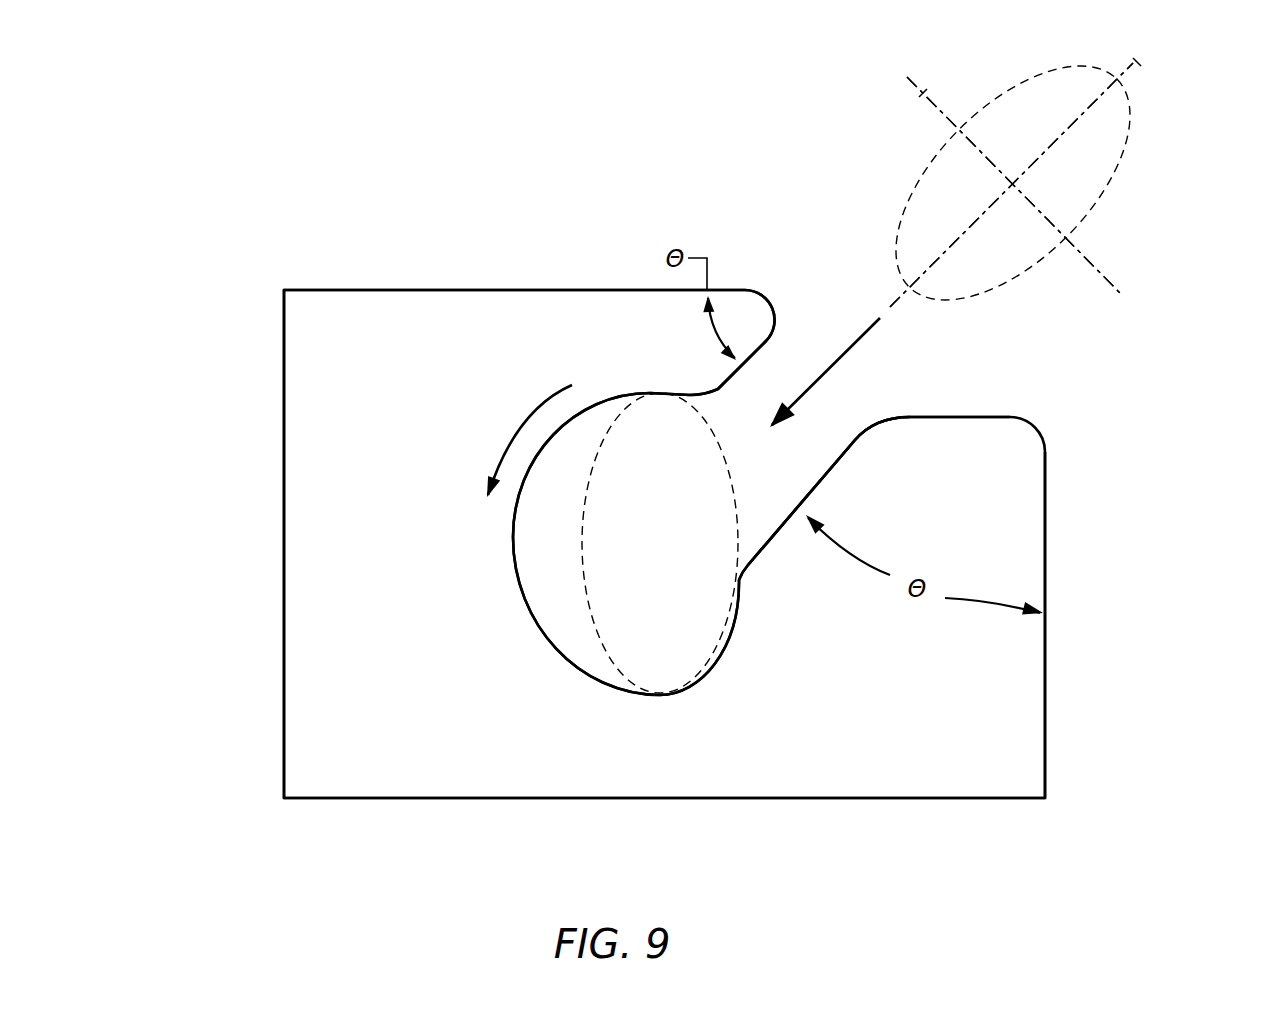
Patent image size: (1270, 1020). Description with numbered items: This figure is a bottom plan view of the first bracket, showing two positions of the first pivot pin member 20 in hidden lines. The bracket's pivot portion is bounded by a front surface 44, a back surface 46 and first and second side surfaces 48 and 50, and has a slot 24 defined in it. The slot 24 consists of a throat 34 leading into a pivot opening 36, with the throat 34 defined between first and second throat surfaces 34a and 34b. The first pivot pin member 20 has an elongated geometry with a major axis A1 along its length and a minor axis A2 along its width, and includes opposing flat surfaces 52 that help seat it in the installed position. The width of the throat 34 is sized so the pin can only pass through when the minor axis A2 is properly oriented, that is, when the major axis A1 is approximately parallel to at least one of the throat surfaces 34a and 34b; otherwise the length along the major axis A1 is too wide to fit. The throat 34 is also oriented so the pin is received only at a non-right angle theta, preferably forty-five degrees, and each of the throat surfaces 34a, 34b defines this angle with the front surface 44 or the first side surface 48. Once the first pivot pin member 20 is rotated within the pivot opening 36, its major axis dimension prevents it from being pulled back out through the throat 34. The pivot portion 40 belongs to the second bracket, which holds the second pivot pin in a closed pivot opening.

The first pivot pin member 20 is at (670, 658).
The slot 24 is at (870, 418).
The throat 34 is at (782, 482).
The first throat surface 34a is at (780, 540).
The second throat surface 34b is at (727, 373).
The pivot opening 36 is at (575, 645).
The pivot portion 40 is at (327, 697).
The front surface 44 is at (358, 290).
The back surface 46 is at (348, 798).
The first side surface 48 is at (1045, 522).
The second side surface 50 is at (282, 542).
The opposing flat surfaces 52 is at (1112, 68).
The major axis A1 is at (1131, 65).
The minor axis A2 is at (923, 93).